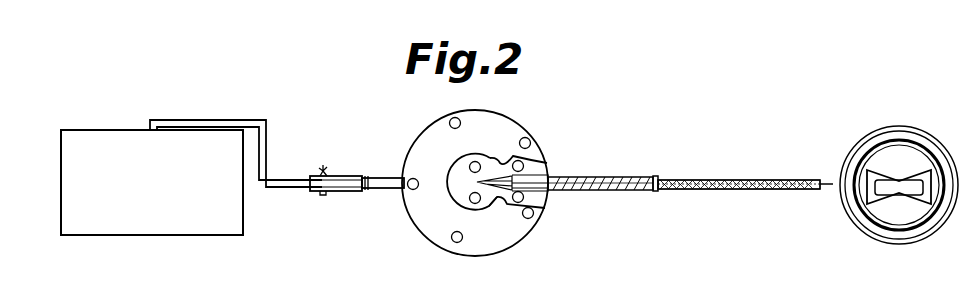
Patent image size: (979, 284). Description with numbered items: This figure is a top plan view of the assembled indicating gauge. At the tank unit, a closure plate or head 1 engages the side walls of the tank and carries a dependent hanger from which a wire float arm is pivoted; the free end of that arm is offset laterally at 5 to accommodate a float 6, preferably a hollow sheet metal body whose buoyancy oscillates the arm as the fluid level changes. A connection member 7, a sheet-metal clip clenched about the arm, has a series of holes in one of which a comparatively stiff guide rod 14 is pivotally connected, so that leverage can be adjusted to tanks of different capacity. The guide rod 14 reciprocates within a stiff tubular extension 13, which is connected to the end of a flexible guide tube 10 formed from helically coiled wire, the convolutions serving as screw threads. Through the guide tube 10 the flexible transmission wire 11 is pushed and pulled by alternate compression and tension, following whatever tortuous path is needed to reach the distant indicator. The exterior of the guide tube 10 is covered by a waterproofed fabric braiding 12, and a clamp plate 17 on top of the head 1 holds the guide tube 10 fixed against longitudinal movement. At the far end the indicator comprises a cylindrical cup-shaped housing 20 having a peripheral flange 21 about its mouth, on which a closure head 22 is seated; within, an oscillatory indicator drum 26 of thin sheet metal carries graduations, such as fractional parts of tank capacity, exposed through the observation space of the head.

The closure plate or head 1 is at (497, 132).
The laterally offset end of float arm 5 is at (260, 151).
The float 6 is at (152, 182).
The connection member 7 is at (338, 192).
The guide tube 10 is at (730, 190).
The transmission wire 11 is at (827, 193).
The fabric envelope or braiding 12 is at (773, 180).
The tubular extension 13 is at (385, 189).
The guide rod 14 is at (343, 176).
The clamp plate 17 is at (493, 197).
The housing 20 is at (911, 128).
The peripheral flange 21 is at (928, 177).
The closure head 22 is at (944, 212).
The indicator drum 26 is at (892, 196).